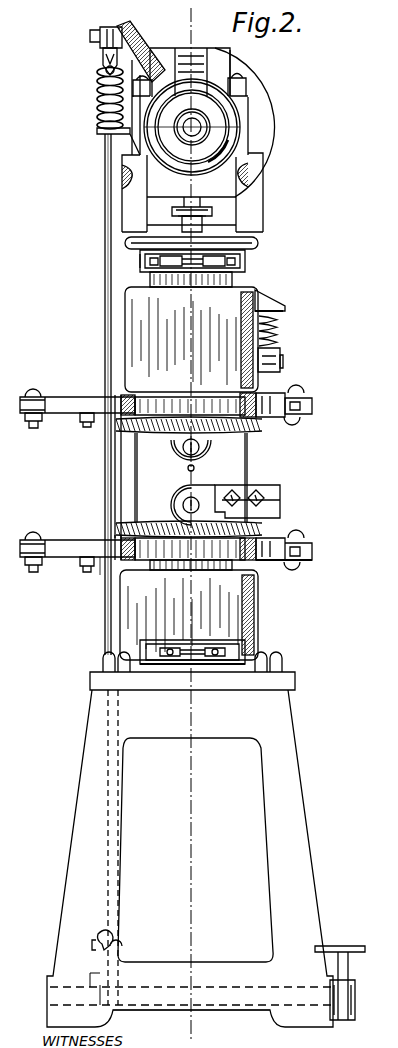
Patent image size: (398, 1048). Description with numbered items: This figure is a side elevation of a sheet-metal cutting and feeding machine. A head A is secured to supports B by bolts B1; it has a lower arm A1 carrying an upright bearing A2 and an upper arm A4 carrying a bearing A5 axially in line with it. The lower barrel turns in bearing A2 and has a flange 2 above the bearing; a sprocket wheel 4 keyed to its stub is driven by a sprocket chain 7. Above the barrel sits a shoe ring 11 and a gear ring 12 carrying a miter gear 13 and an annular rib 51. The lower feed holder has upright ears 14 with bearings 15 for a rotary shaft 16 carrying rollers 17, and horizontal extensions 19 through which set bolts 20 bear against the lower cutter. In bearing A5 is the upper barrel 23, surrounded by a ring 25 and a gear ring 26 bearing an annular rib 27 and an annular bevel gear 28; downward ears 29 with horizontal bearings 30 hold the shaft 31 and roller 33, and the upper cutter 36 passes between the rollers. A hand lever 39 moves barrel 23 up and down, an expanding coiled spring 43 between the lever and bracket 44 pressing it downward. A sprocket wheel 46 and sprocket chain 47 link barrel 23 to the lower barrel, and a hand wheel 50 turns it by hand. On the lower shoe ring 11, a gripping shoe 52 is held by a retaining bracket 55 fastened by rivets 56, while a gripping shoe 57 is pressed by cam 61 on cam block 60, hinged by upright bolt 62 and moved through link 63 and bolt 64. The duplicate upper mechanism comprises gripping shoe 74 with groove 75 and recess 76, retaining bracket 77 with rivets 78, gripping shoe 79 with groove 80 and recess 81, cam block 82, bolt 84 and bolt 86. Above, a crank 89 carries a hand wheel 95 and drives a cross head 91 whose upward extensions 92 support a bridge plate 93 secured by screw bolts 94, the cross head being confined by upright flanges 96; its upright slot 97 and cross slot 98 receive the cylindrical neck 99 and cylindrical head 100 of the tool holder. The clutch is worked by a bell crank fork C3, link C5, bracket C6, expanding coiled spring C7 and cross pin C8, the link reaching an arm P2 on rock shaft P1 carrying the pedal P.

The head A is at (214, 140).
The crank 89 is at (203, 122).
The cross head 91 is at (250, 128).
The bridge plate 93 is at (248, 100).
The upward extensions 92 is at (175, 60).
The screw bolts 94 is at (152, 80).
The hand wheel 95 is at (232, 133).
The upright flanges 96 is at (122, 190).
The sprocket wheel 4 is at (256, 651).
The cylindrical neck 99 is at (178, 208).
The cross slot 98 is at (191, 205).
The upright slot 97 is at (204, 210).
The cylindrical head 100 is at (203, 218).
The hand wheel 50 is at (258, 243).
The sprocket wheel 46 is at (243, 262).
The sprocket chain 47 is at (143, 266).
The barrel 23 is at (233, 280).
The bearing A5 is at (145, 321).
The gear ring 26 is at (180, 390).
The upper arm A4 is at (279, 298).
The bracket 44 is at (284, 309).
The expanding coiled spring 43 is at (277, 330).
The hand lever 39 is at (280, 363).
The bolts or rivets 78 is at (303, 362).
The bell crank fork C3 is at (118, 52).
The cross pin C8 is at (98, 70).
The expanding coiled spring C7 is at (96, 105).
The bracket C6 is at (97, 134).
The link C5 is at (104, 246).
The cam block 82 is at (58, 397).
The bolt 86 is at (33, 395).
The bolt 84 is at (82, 425).
The recess 81 is at (115, 398).
The gripping shoe 79 is at (124, 412).
The groove 80 is at (185, 402).
The annular rib 27 is at (260, 425).
The annular bevel gear 28 is at (250, 434).
The groove 75 is at (262, 385).
The gripping shoe 74 is at (276, 398).
The ring 25 is at (300, 392).
The retaining bracket 77 is at (312, 406).
The recess 76 is at (292, 424).
The downward directed ears 29 is at (172, 446).
The roller 33 is at (175, 463).
The horizontal bearing 30 is at (199, 447).
The shaft 31 is at (200, 452).
The upper tool or cutter 36 is at (188, 470).
The upright ears 14 is at (174, 495).
The rollers 17 is at (198, 488).
The bearing 15 is at (183, 506).
The rotary shaft 16 is at (187, 509).
The horizontal extension 19 is at (280, 502).
The set bolts 20 is at (258, 492).
The miter gear 13 is at (136, 524).
The gear ring 12 is at (248, 540).
The cam block 60 is at (55, 548).
The link 63 is at (33, 539).
The bolt 64 is at (33, 572).
The upright bolt 62 is at (82, 572).
The cam 61 is at (101, 565).
The gripping shoe 57 is at (124, 548).
The annular rib 51 is at (118, 545).
The gripping shoe 52 is at (282, 543).
The retaining bracket 55 is at (312, 548).
The shoe ring 11 is at (300, 562).
The bolts or rivets 56 is at (298, 570).
The flange 2 is at (235, 566).
The upright bearing A2 is at (255, 616).
The lower arm A1 is at (304, 596).
The sprocket chain 7 is at (232, 666).
The bolts B1 is at (106, 660).
The supports B is at (300, 783).
The arm P2 is at (115, 952).
The pedal P is at (348, 966).
The rock shaft P1 is at (248, 1005).